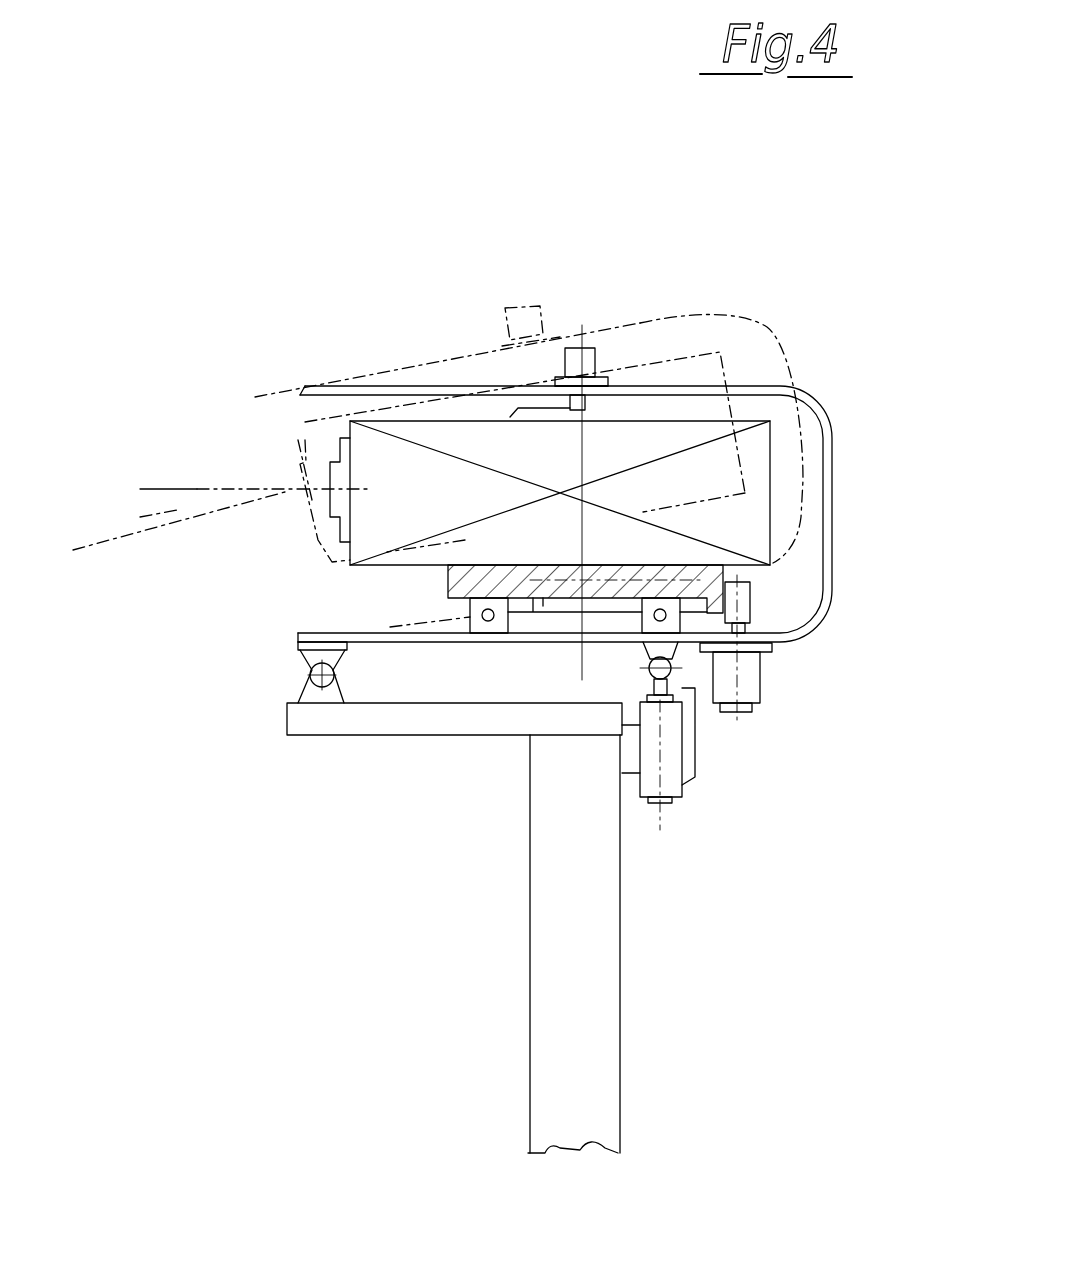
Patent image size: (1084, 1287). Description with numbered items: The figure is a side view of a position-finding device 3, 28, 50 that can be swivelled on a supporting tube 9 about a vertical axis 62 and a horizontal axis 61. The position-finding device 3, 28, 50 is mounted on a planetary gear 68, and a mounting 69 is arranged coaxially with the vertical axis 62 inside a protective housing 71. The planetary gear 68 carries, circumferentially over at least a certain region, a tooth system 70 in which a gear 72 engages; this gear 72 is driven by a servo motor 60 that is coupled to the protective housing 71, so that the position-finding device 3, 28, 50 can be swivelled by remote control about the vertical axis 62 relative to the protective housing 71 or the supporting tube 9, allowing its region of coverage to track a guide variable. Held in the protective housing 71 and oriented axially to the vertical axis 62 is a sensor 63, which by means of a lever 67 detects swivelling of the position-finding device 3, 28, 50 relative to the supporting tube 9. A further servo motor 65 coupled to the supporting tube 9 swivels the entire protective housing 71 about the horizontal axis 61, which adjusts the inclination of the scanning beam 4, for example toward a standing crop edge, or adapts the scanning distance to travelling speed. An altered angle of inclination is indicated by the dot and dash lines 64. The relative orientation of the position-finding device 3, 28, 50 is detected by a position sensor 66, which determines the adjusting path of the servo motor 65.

The position-finding device 3 is at (547, 395).
The position-finding device 28 is at (547, 395).
The position-finding device 50 is at (427, 457).
The scanning beam 4 is at (140, 489).
The supporting tube 9 is at (560, 997).
The servo motor 60 is at (750, 682).
The horizontal axis 61 is at (316, 683).
The vertical axis 62 is at (585, 335).
The sensor 63 is at (588, 358).
The dot and dash lines 64 is at (767, 327).
The further servo motor 65 is at (670, 782).
The position sensor 66 is at (695, 765).
The lever 67 is at (533, 408).
The planetary gear 68 is at (477, 585).
The mounting 69 is at (497, 620).
The tooth system 70 is at (567, 607).
The protective housing 71 is at (800, 447).
The gear 72 is at (745, 605).